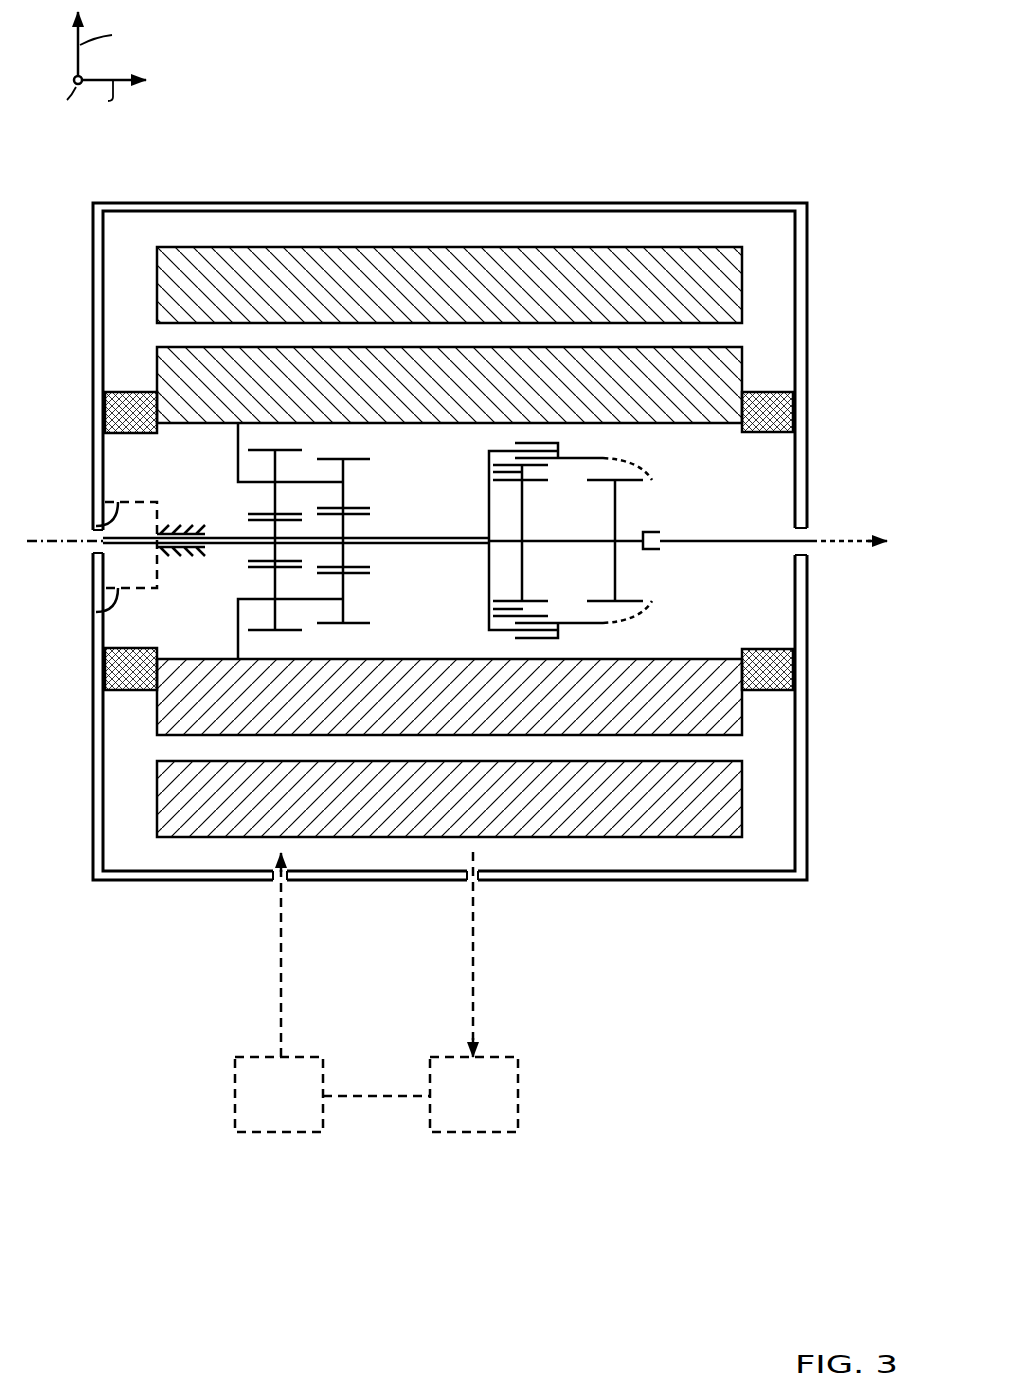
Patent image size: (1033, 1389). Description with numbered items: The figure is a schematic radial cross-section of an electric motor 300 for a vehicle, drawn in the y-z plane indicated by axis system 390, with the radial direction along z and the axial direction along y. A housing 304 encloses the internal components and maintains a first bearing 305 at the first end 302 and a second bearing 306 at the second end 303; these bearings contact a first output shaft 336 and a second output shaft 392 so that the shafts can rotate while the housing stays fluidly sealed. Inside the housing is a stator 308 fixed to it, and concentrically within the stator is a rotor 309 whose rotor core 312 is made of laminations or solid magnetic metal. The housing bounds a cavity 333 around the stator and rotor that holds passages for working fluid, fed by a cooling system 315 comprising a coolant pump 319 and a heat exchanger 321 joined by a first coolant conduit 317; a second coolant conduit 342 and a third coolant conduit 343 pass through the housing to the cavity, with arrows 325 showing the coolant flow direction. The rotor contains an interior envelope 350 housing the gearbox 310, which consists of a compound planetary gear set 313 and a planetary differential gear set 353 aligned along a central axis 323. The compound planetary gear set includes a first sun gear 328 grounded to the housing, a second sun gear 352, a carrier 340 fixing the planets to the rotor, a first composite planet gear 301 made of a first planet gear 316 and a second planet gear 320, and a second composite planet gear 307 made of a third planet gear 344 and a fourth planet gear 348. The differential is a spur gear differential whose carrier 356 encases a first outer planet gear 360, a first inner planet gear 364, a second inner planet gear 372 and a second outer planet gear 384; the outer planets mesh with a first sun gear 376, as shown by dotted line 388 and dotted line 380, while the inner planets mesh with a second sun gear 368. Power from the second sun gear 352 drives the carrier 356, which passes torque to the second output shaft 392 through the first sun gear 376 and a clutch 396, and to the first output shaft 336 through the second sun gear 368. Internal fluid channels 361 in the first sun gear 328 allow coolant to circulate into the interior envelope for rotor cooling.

The electric motor 300 is at (757, 88).
The first composite planet gear 301 is at (218, 478).
The first end 302 is at (72, 432).
The second end 303 is at (820, 426).
The housing 304 is at (348, 203).
The first bearing 305 is at (104, 668).
The second bearing 306 is at (794, 668).
The second composite planet gear 307 is at (228, 603).
The stator 308 is at (499, 236).
The rotor 309 is at (162, 341).
The gearbox 310 is at (736, 628).
The rotor core 312 is at (741, 347).
The compound planetary gear set 313 is at (393, 493).
The cooling system 315 is at (345, 1170).
The first planet gear 316 is at (248, 452).
The first coolant conduit 317 is at (370, 1098).
The coolant pump 319 is at (234, 1079).
The second planet gear 320 is at (352, 458).
The heat exchanger 321 is at (519, 1088).
The central axis 323 is at (60, 542).
The arrows 325 is at (472, 955).
The first sun gear 328 is at (225, 534).
The cavity 333 is at (660, 866).
The first output shaft 336 is at (128, 546).
The carrier 340 is at (237, 449).
The second coolant conduit 342 is at (276, 882).
The third coolant conduit 343 is at (466, 882).
The third planet gear 344 is at (250, 630).
The fourth planet gear 348 is at (330, 623).
The interior envelope 350 is at (697, 423).
The second sun gear 352 is at (383, 537).
The planetary differential gear set 353 is at (482, 553).
The carrier 356 is at (488, 507).
The first outer planet gear 360 is at (558, 443).
The internal fluid channels 361 is at (97, 525).
The first inner planet gear 364 is at (548, 480).
The second sun gear 368 is at (523, 541).
The second inner planet gear 372 is at (548, 601).
The first sun gear 376 is at (616, 507).
The dotted line 380 is at (652, 601).
The second outer planet gear 384 is at (558, 638).
The dotted line 388 is at (652, 480).
The axis system 390 is at (58, 44).
The second output shaft 392 is at (710, 541).
The clutch 396 is at (625, 544).